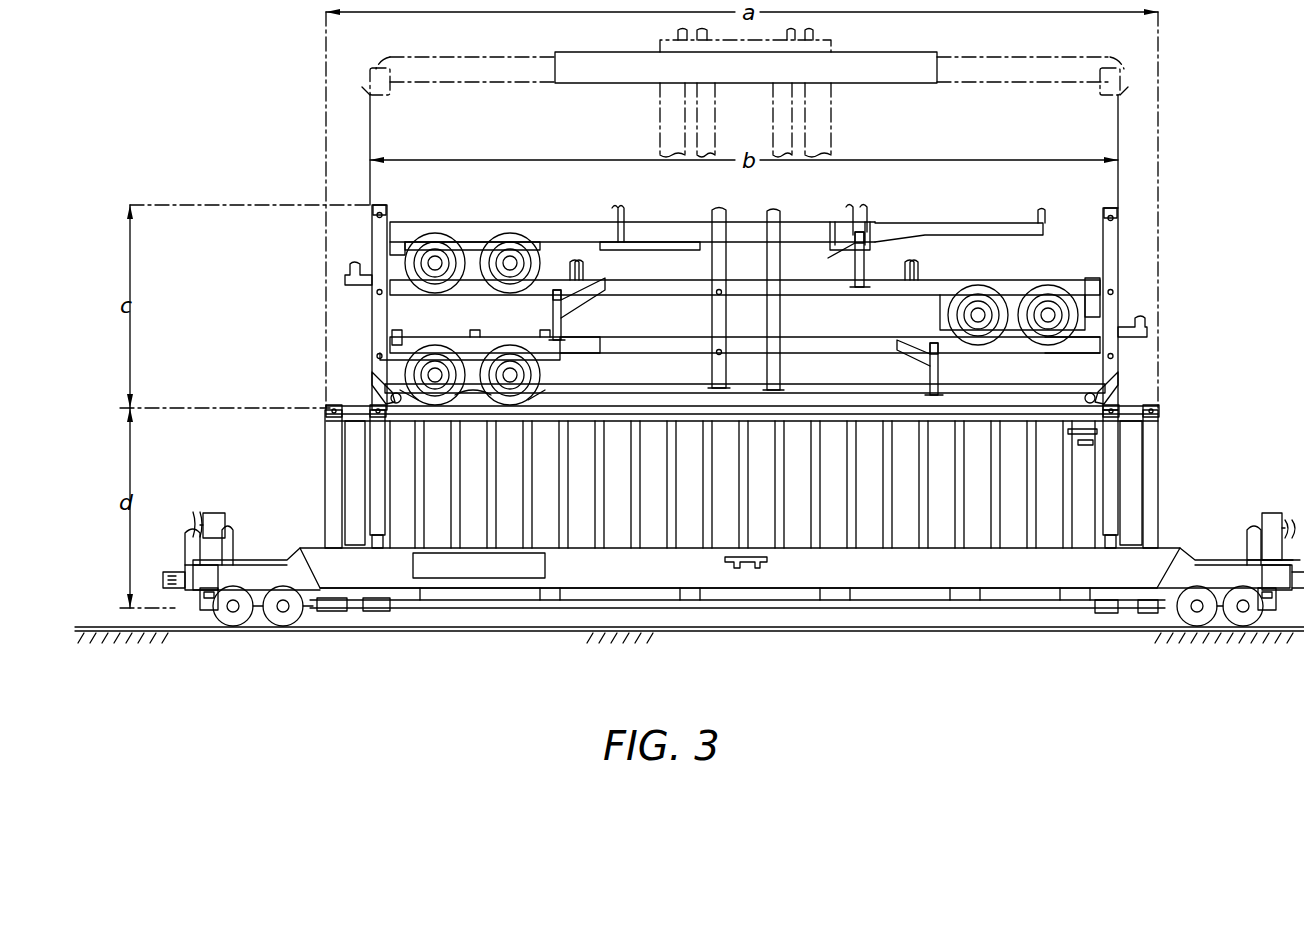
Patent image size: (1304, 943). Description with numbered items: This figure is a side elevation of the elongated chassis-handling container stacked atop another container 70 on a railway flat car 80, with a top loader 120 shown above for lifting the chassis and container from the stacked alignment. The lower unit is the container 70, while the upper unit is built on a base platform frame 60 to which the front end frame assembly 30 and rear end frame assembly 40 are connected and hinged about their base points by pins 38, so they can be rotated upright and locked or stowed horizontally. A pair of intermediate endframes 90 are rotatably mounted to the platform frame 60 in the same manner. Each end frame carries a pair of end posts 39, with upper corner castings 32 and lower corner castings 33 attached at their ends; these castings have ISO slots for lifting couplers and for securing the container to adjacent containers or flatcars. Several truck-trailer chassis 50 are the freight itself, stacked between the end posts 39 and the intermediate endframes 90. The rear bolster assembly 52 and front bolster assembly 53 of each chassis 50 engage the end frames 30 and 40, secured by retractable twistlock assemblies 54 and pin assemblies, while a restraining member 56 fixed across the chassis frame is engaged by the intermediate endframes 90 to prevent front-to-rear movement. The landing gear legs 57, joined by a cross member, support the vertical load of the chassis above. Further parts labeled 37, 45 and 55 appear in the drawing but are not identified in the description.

The top loader 120 is at (838, 82).
The front end frame assembly 30 is at (370, 228).
The upper corner casting 32 is at (372, 207).
The lower corner casting 33 is at (391, 395).
The inner post 37 is at (370, 441).
The pin 38 is at (372, 373).
The end post 39 is at (372, 247).
The rear end frame assembly 40 is at (1118, 245).
The container end panel 45 is at (744, 483).
The chassis 50 is at (800, 230).
The chassis rear bolster assembly 52 is at (395, 336).
The front bolster assembly 53 is at (345, 278).
The retractable twistlock assembly 54 is at (397, 328).
The landing gear bracket 55 is at (612, 212).
The restraining member 56 is at (700, 243).
The landing gear leg 57 is at (873, 263).
The platform frame 60 is at (1040, 384).
The container 70 is at (754, 597).
The railway flat car 80 is at (527, 608).
The intermediate endframe 90 is at (767, 212).